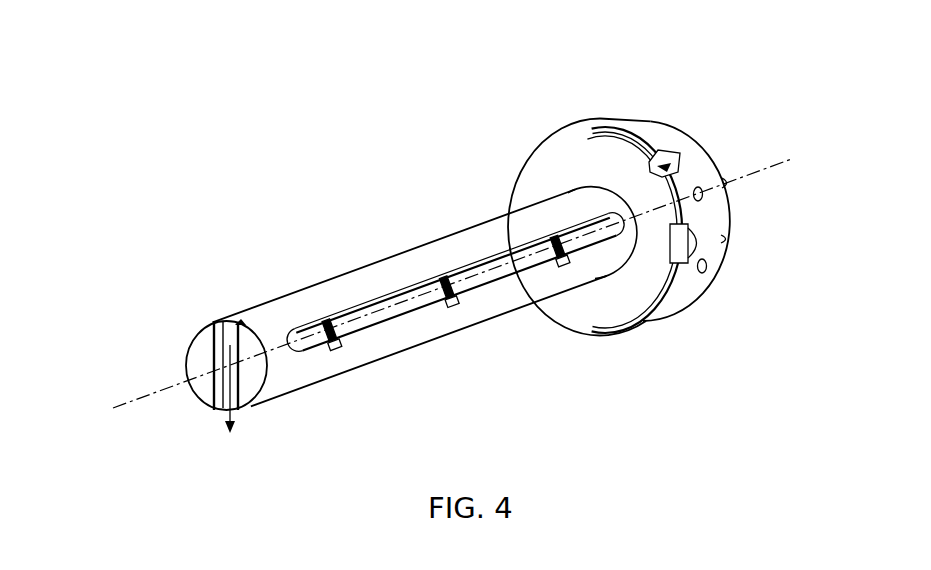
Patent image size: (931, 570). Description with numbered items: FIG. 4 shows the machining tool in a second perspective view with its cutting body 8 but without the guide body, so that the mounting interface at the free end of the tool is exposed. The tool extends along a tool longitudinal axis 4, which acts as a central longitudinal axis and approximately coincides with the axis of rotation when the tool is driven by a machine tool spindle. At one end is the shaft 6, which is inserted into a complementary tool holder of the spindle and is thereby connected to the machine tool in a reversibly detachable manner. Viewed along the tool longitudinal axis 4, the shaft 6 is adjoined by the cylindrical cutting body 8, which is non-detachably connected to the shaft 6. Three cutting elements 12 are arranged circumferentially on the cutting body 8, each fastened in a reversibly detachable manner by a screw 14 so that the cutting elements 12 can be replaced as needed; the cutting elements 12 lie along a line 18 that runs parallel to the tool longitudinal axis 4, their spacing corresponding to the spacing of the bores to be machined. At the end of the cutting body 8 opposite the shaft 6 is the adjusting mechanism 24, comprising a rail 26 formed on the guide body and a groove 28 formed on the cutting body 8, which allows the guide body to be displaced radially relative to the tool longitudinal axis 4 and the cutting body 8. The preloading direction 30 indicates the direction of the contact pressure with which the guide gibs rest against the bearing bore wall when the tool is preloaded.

The tool longitudinal axis 4 is at (762, 160).
The shaft 6 is at (555, 124).
The cutting body 8 is at (363, 255).
The cutting element 12 is at (338, 364).
The screw 14 is at (322, 307).
The line 18 is at (646, 240).
The adjusting mechanism 24 is at (158, 355).
The rail 26 is at (279, 338).
The groove 28 is at (202, 352).
The preloading direction 30 is at (221, 424).